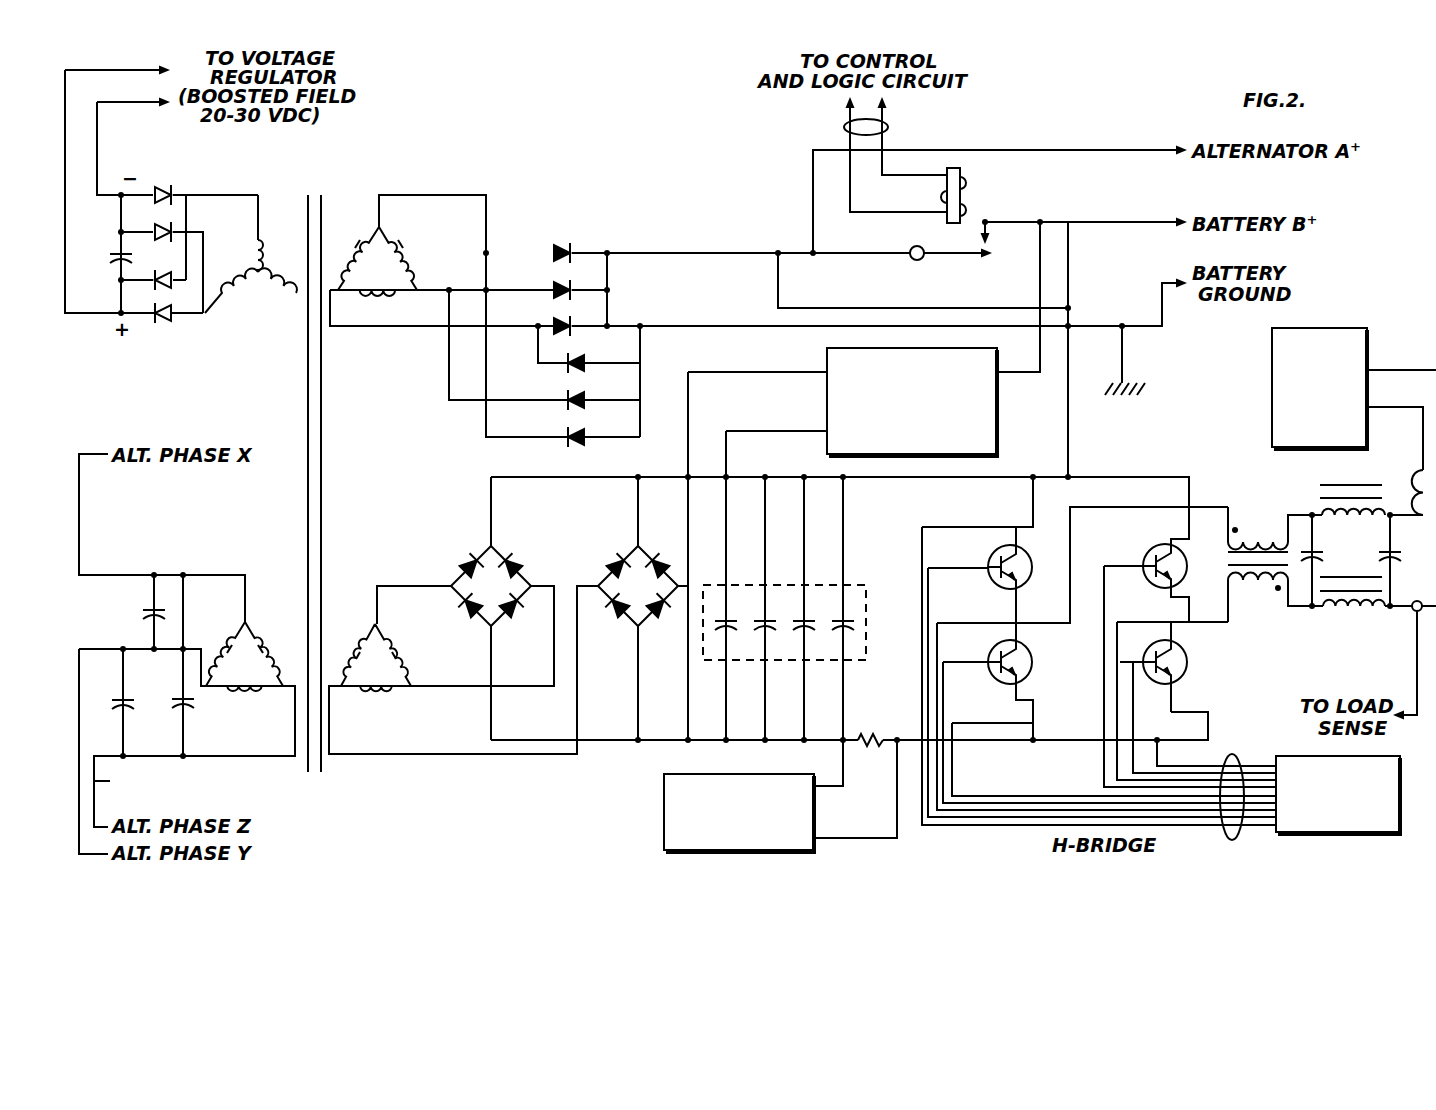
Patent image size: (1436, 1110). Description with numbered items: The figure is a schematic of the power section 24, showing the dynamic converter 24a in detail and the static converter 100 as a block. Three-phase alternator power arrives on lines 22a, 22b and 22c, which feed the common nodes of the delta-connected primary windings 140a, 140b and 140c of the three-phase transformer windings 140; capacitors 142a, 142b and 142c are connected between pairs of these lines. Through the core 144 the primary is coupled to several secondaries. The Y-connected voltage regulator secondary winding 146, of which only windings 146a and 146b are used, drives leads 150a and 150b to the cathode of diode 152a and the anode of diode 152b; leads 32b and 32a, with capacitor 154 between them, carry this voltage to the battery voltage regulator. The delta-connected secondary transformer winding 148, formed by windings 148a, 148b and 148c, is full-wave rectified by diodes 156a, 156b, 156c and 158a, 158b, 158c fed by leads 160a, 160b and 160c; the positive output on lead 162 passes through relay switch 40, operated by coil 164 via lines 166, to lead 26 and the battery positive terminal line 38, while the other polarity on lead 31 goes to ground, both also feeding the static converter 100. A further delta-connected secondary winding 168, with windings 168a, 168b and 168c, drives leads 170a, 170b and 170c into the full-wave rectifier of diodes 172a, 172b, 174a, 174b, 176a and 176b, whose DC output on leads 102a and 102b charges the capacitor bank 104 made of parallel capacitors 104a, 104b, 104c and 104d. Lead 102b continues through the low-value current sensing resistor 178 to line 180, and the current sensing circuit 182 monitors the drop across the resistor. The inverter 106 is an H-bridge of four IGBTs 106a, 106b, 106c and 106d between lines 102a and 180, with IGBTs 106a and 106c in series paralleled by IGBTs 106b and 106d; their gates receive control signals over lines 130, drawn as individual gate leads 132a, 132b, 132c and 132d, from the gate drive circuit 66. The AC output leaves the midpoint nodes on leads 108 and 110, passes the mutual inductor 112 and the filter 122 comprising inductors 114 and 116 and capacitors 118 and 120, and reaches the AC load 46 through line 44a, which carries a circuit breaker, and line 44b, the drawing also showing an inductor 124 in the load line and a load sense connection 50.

The line 22a is at (122, 575).
The line 22b is at (92, 649).
The line 22c is at (110, 781).
The power section 24 is at (378, 785).
The dynamic converter 24a is at (598, 145).
The line 26 is at (1040, 148).
The lead 31 is at (1148, 330).
The lead 32a is at (66, 260).
The lead 32b is at (100, 165).
The positive terminal line 38 is at (1105, 222).
The relay switch 40 is at (945, 256).
The line 44a is at (1393, 410).
The load lead 44b is at (1434, 562).
The AC load 46 is at (1272, 388).
The load sense node 50 is at (1414, 612).
The gate drive circuit 66 is at (1340, 834).
The static converter 100 is at (1000, 452).
The lead 102a is at (775, 431).
The lead 102b is at (773, 372).
The capacitor bank 104 is at (700, 664).
The capacitor 104a is at (733, 605).
The capacitor 104b is at (772, 605).
The capacitor 104c is at (811, 605).
The capacitor 104d is at (850, 605).
The inverter 106 is at (975, 836).
The insulated gate bipolar transistor 106a is at (1003, 545).
The insulated gate bipolar transistor 106b is at (1152, 585).
The insulated gate bipolar transistor 106c is at (1000, 640).
The insulated gate bipolar transistor 106d is at (1188, 662).
The lead 108 is at (1158, 507).
The lead 110 is at (1230, 588).
The mutual inductor 112 is at (1250, 538).
The inductor 114 is at (1322, 512).
The inductor 116 is at (1345, 609).
The capacitor 118 is at (1310, 600).
The capacitor 120 is at (1385, 552).
The filter 122 is at (1325, 620).
The load inductor 124 is at (1410, 486).
The lines 130 is at (1234, 754).
The gate lead 132a is at (930, 572).
The gate lead 132b is at (1104, 566).
The gate lead 132c is at (975, 703).
The gate lead 132d is at (1120, 662).
The three-phase transformer windings 140 is at (270, 766).
The primary winding 140a is at (268, 650).
The primary winding 140b is at (255, 690).
The primary winding 140c is at (228, 650).
The capacitor 142a is at (160, 600).
The capacitor 142b is at (130, 710).
The capacitor 142c is at (180, 698).
The core 144 is at (323, 482).
The voltage regulator secondary winding 146 is at (258, 300).
The secondary winding 146a is at (236, 298).
The secondary winding 146b is at (260, 235).
The secondary transformer winding 148 is at (352, 216).
The secondary winding 148a is at (363, 240).
The secondary winding 148b is at (437, 240).
The secondary winding 148c is at (380, 295).
The lead 150a is at (180, 225).
The lead 150b is at (185, 325).
The diode 152a is at (166, 186).
The diode 152b is at (160, 292).
The capacitor 154 is at (112, 250).
The diode 156a is at (585, 248).
The diode 156b is at (585, 284).
The diode 156c is at (585, 320).
The diode 158a is at (565, 375).
The diode 158b is at (565, 412).
The diode 158c is at (568, 445).
The lead 160a is at (450, 195).
The lead 160b is at (430, 290).
The lead 160c is at (367, 327).
The lead 162 is at (745, 252).
The coil 164 is at (962, 197).
The lines 166 is at (844, 127).
The secondary winding 168 is at (350, 630).
The winding 168a is at (358, 650).
The winding 168b is at (400, 655).
The winding 168c is at (375, 690).
The lead 170a is at (455, 756).
The lead 170b is at (422, 582).
The lead 170c is at (554, 690).
The diode 172a is at (618, 560).
The diode 172b is at (618, 610).
The diode 174a is at (466, 560).
The diode 174b is at (470, 610).
The diode 176a is at (514, 610).
The diode 176b is at (513, 560).
The current sensing resistor 178 is at (884, 760).
The line 180 is at (890, 740).
The current sensing circuit 182 is at (664, 812).